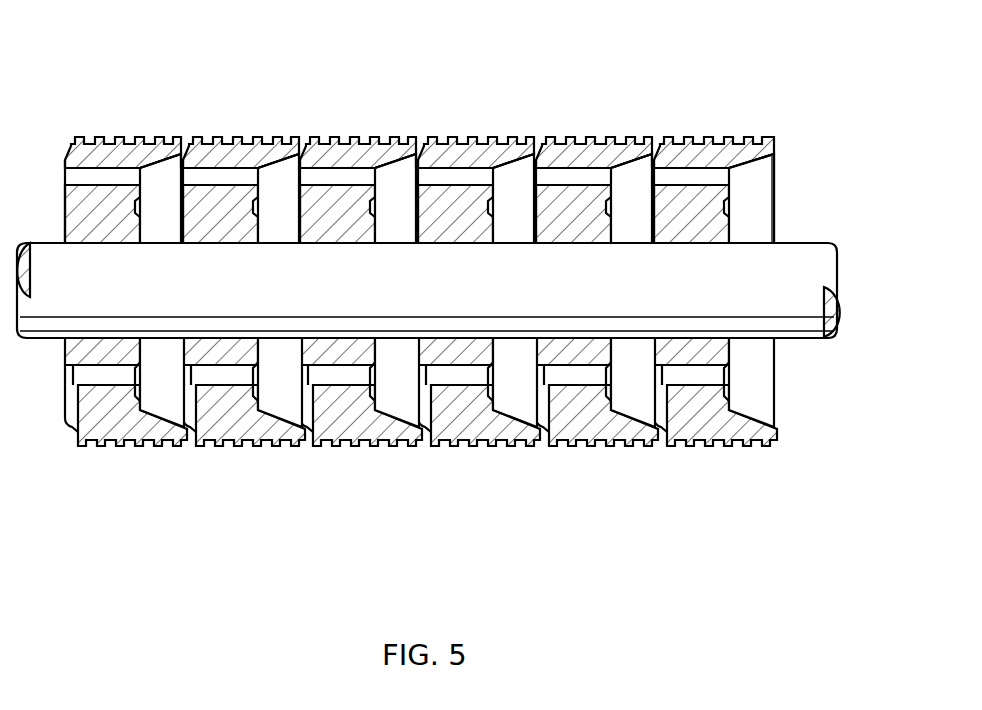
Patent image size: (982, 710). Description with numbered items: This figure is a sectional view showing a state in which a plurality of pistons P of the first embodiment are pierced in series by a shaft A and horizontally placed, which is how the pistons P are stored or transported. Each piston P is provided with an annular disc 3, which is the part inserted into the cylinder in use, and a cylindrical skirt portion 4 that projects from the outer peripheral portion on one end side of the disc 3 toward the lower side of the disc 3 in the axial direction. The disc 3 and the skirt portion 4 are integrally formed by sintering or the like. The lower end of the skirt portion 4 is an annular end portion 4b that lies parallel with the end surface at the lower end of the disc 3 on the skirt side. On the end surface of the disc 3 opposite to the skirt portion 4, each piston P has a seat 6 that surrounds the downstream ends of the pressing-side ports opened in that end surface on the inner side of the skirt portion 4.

The annular disc 3 is at (87, 140).
The cylindrical skirt portion 4 is at (183, 138).
The annular end portion 4b is at (193, 142).
The seat 6 is at (183, 158).
The shaft A is at (803, 243).
The piston P is at (122, 134).